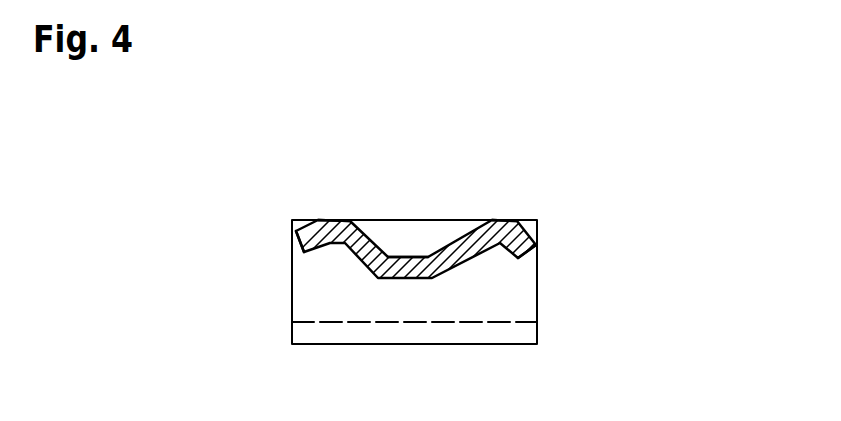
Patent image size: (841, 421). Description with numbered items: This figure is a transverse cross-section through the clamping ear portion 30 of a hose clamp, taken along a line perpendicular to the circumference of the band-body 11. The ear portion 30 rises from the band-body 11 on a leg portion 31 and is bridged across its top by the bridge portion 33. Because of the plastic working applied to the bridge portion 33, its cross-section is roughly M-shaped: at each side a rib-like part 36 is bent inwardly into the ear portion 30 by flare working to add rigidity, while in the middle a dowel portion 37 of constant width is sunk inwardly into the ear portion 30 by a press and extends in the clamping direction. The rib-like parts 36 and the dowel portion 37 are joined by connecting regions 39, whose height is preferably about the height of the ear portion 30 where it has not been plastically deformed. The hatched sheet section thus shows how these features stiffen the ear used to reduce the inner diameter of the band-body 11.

The ear portion 30 is at (560, 202).
The front leg portion 31 is at (522, 300).
The band-body 11 is at (292, 333).
The bridge portion 33 is at (377, 220).
The dowel portion 37 is at (427, 258).
The connecting regions 39 is at (327, 220).
The rib-like parts 36 is at (296, 243).